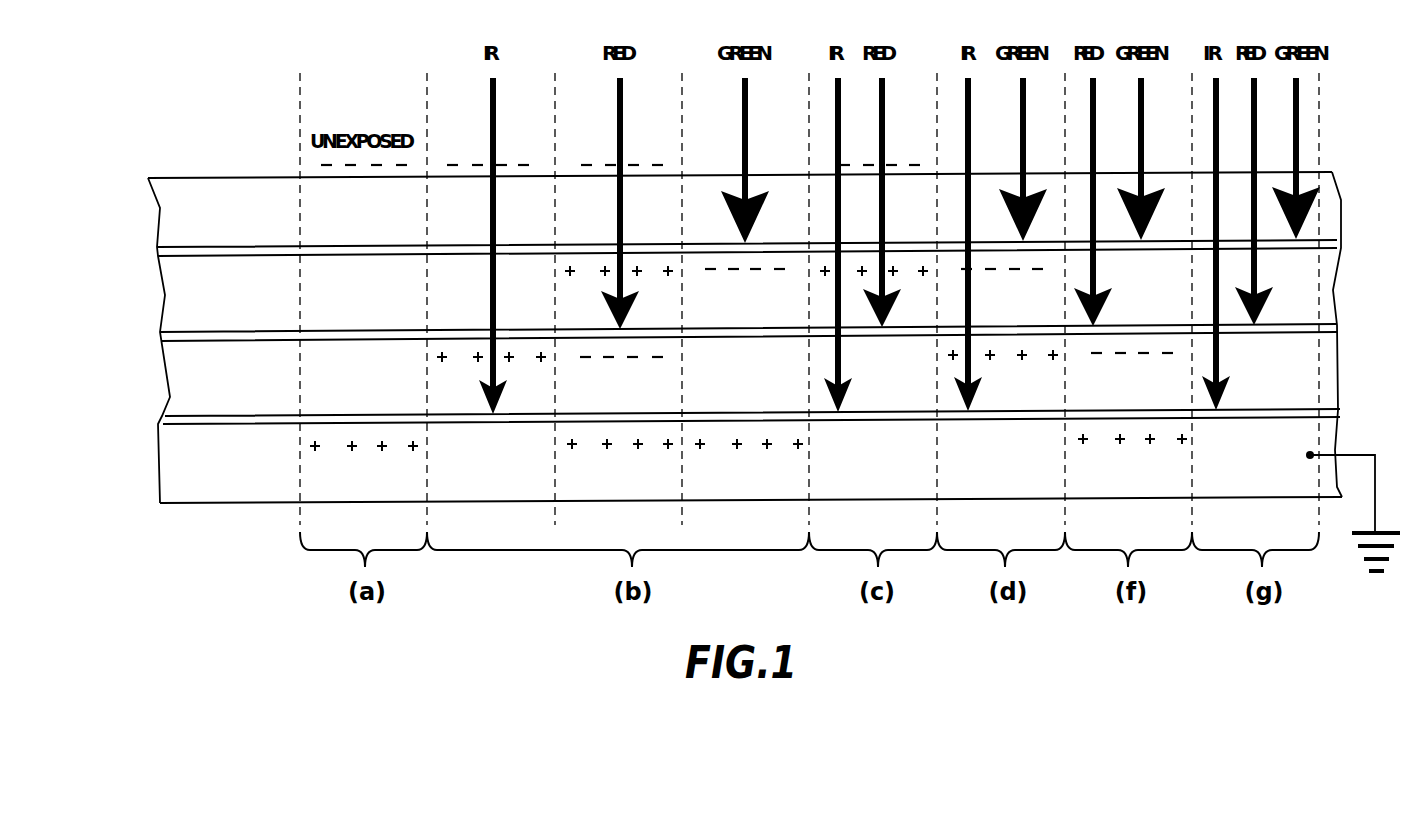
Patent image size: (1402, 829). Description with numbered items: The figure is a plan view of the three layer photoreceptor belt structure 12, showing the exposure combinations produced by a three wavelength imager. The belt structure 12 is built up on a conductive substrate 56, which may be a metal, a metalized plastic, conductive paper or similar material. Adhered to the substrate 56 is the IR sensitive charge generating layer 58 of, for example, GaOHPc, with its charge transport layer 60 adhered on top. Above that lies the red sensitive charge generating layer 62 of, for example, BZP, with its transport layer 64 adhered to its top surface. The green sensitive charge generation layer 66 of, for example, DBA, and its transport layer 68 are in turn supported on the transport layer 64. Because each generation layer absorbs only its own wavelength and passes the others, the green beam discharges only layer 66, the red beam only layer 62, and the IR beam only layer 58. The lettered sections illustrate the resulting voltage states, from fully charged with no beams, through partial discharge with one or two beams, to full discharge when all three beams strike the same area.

The photoreceptor belt structure 12 is at (216, 99).
The conductive substrate 56 is at (497, 478).
The IR sensitive charge generating layer 58 is at (168, 421).
The charge transport layer 60 is at (170, 395).
The red sensitive charge generating layer 62 is at (160, 344).
The charge transport layer 64 is at (165, 295).
The green sensitive charge generation layer 66 is at (158, 255).
The charge transport layer 68 is at (160, 208).